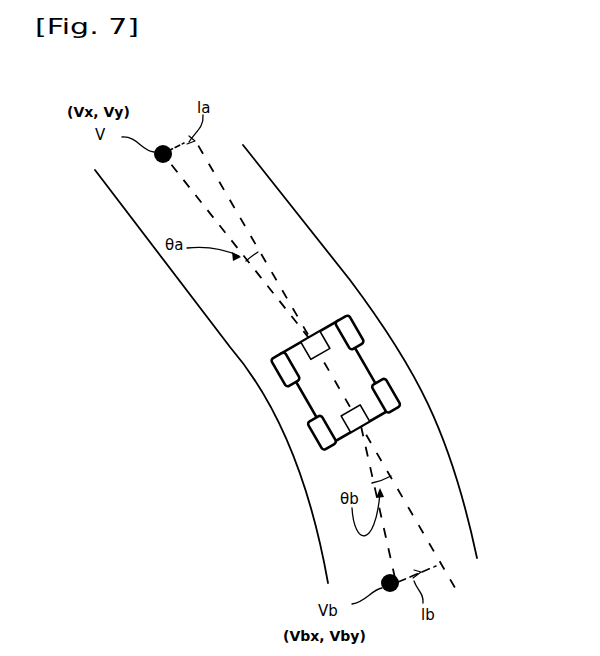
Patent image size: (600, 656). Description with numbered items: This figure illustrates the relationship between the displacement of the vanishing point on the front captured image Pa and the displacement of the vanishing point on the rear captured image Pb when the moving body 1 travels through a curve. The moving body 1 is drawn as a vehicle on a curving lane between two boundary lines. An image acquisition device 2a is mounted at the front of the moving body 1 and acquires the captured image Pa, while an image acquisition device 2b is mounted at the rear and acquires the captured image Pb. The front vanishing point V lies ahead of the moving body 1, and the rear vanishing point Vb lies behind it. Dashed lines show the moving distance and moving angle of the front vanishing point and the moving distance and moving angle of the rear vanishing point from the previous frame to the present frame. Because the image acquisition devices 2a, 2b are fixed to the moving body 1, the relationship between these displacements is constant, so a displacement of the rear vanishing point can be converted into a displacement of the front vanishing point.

The moving body 1 is at (344, 321).
The image acquisition device 2a is at (306, 356).
The image acquisition device 2b is at (345, 425).